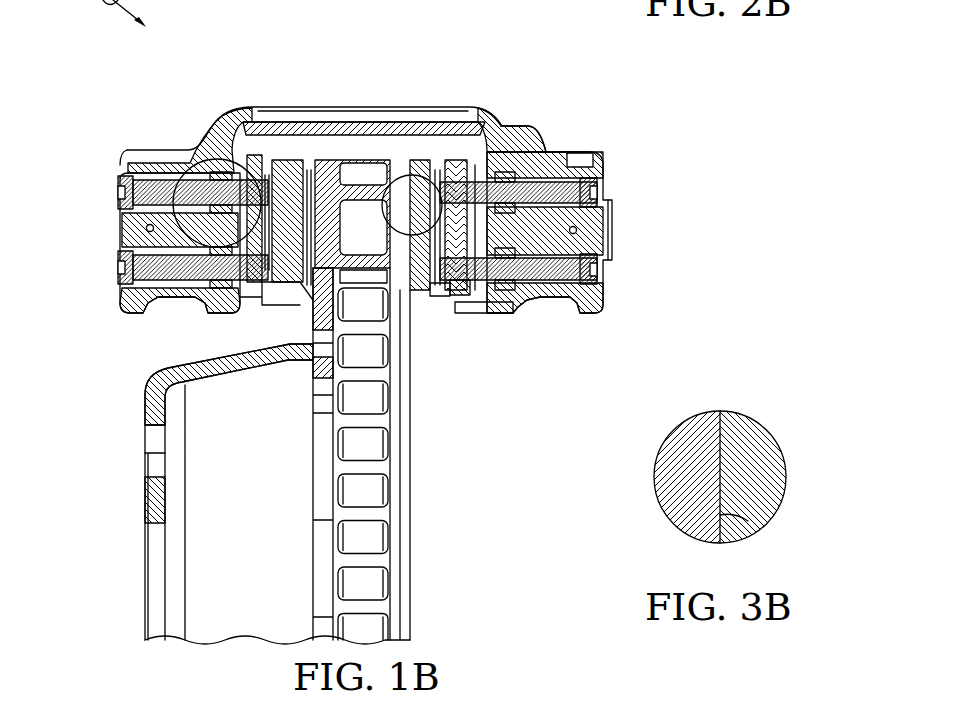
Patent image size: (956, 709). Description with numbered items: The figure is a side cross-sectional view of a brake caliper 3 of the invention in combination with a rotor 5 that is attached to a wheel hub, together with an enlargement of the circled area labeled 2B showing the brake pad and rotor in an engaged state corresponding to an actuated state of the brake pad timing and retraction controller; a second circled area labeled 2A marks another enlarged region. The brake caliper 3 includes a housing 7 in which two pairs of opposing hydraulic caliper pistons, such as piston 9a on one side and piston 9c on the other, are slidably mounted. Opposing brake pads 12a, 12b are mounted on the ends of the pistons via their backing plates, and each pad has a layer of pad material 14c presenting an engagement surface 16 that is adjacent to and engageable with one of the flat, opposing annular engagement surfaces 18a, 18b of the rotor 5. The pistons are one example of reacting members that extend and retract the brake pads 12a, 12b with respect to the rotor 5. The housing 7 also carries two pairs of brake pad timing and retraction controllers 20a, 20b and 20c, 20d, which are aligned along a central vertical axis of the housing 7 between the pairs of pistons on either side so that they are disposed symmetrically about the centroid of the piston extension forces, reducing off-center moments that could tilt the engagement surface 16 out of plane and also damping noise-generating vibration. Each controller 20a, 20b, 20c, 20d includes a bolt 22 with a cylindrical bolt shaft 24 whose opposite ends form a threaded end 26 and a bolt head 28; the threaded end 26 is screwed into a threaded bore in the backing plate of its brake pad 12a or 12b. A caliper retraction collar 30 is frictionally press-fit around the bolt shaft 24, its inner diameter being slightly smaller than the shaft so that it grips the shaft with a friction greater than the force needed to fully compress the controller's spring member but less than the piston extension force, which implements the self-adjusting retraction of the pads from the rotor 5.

In FIG. 1B, the caliper retraction collar 30 is at (190, 152).
In FIG. 1B, the hydraulic caliper piston 9a is at (243, 161).
In FIG. 1B, the threaded end 26 is at (252, 178).
In FIG. 1B, the brake pad 12a is at (290, 166).
In FIG. 1B, the brake pad 12b is at (425, 164).
In FIG. 1B, the detail view 2A is at (177, 88).
In FIG. 1B, the detail view 2B is at (423, 223).
In FIG. 1B, the hydraulic caliper piston 9c is at (483, 177).
In FIG. 1B, the housing 7 is at (533, 153).
In FIG. 1B, the brake pad timing and retraction controller 20c is at (525, 178).
In FIG. 1B, the brake pad timing and retraction controller 20d is at (527, 283).
In FIG. 1B, the brake caliper 3 is at (630, 147).
In FIG. 1B, the bolt 22 is at (141, 178).
In FIG. 1B, the bolt head 28 is at (118, 194).
In FIG. 1B, the bolt shaft 24 is at (200, 208).
In FIG. 1B, the brake pad timing and retraction controller 20a is at (142, 303).
In FIG. 1B, the brake pad timing and retraction controller 20b is at (193, 283).
In FIG. 1B, the engagement surface 18a is at (292, 340).
In FIG. 1B, the engagement surface 18b is at (425, 285).
In FIG. 3B, the engagement surface 18b is at (745, 518).
In FIG. 1B, the rotor 5 is at (416, 488).
In FIG. 3B, the rotor 5 is at (672, 516).
In FIG. 3B, the engagement surface 16 is at (716, 440).
In FIG. 3B, the pad material 14c is at (762, 448).